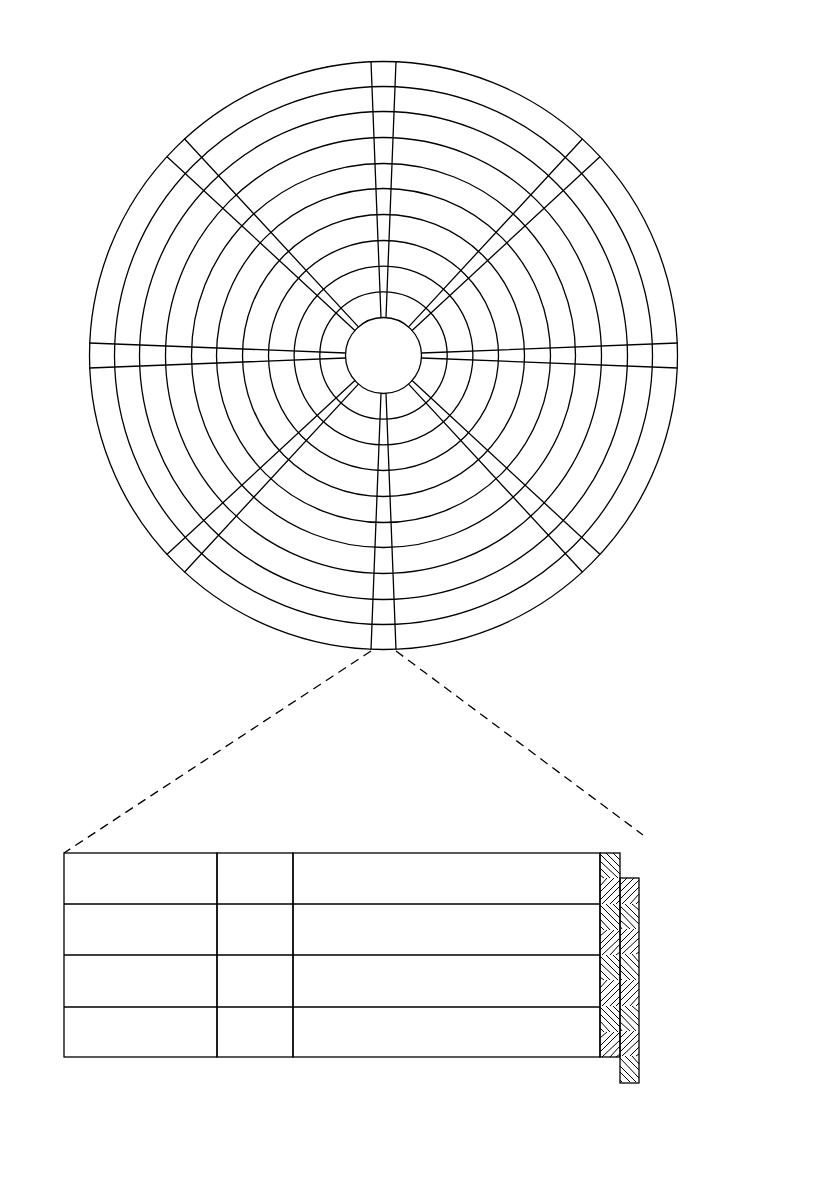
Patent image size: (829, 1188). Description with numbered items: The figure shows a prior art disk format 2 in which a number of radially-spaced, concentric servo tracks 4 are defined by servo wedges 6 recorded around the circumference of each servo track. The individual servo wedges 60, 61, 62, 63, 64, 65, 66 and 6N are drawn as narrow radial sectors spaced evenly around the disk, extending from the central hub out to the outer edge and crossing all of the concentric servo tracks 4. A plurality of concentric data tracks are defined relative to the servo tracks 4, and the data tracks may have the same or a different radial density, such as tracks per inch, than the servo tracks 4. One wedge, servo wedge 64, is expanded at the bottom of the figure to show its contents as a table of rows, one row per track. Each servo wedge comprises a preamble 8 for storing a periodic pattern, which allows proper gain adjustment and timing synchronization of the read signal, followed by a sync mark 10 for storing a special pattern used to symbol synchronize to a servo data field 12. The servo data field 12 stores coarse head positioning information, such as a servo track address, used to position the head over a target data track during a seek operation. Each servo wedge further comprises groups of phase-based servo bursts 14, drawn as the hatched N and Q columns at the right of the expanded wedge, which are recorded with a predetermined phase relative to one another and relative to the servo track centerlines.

The disk format 2 is at (158, 61).
The servo tracks 4 is at (486, 122).
The servo wedges 6 is at (382, 365).
The servo wedge 60 is at (384, 68).
The servo wedge 61 is at (586, 153).
The servo wedge 62 is at (672, 357).
The servo wedge 63 is at (585, 556).
The servo wedge 64 is at (248, 713).
The servo wedge 65 is at (178, 562).
The servo wedge 66 is at (90, 355).
The servo wedge 6N is at (180, 150).
The preamble 8 is at (146, 853).
The sync mark 10 is at (258, 853).
The servo data field 12 is at (437, 853).
The servo bursts 14 is at (642, 846).